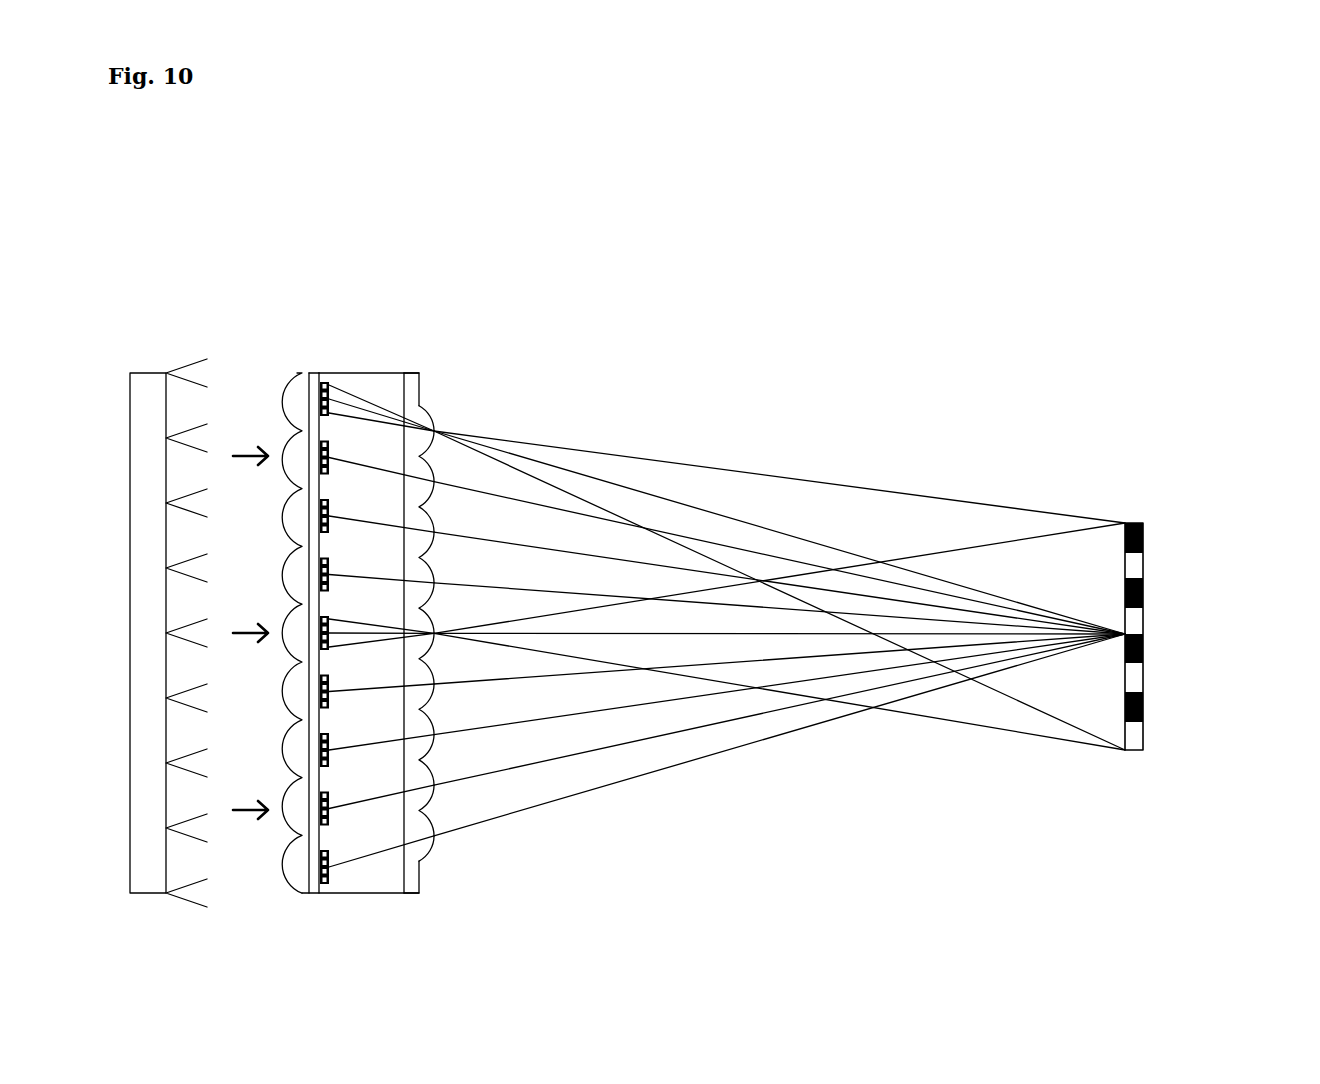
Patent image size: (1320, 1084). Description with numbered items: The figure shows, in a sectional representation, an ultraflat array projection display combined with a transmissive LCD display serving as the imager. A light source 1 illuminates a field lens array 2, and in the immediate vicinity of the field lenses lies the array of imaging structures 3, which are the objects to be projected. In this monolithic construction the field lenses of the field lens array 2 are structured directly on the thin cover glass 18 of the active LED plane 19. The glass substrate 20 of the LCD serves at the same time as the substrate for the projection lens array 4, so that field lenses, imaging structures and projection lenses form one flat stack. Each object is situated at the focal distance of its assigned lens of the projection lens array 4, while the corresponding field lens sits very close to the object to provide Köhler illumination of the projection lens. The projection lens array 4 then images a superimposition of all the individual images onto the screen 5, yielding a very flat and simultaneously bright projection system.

The light source 1 is at (133, 373).
The field lens array 2 is at (310, 373).
The cover glass 18 is at (320, 373).
The active LED plane 19 is at (317, 373).
The array of imaging structures 3 is at (378, 386).
The glass substrate 20 is at (414, 373).
The projection lens array 4 is at (430, 412).
The screen 5 is at (1143, 526).